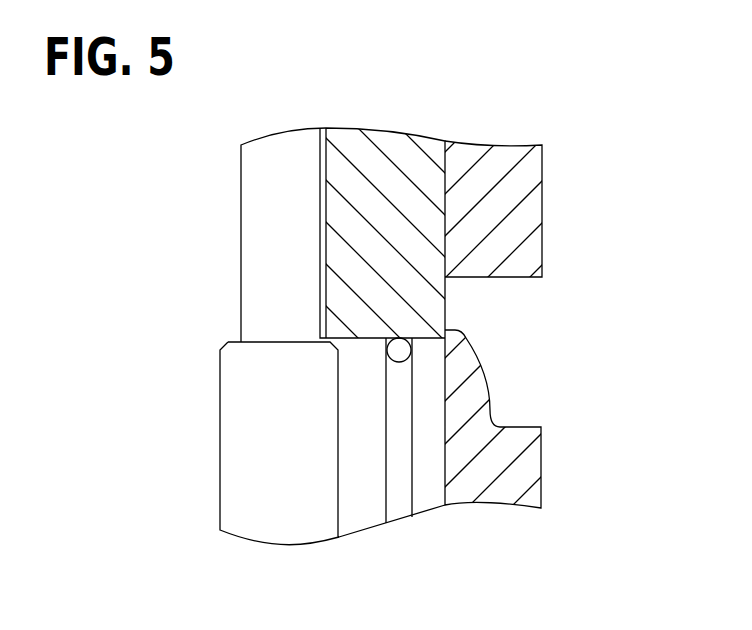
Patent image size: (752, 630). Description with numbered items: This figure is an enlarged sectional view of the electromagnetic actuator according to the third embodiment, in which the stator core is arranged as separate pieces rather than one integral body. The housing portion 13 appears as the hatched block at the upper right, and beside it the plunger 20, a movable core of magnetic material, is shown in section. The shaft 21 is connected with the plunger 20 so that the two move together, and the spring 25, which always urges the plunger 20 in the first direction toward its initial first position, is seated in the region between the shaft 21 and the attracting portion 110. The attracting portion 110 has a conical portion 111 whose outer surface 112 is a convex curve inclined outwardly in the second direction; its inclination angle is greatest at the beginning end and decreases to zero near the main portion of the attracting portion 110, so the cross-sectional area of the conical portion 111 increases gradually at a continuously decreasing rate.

The housing portion 13 is at (510, 207).
The plunger 20 is at (391, 152).
The shaft 21 is at (240, 443).
The spring 25 is at (398, 508).
The attracting portion 110 is at (513, 473).
The conical portion 111 is at (473, 397).
The outer surface 112 is at (480, 372).